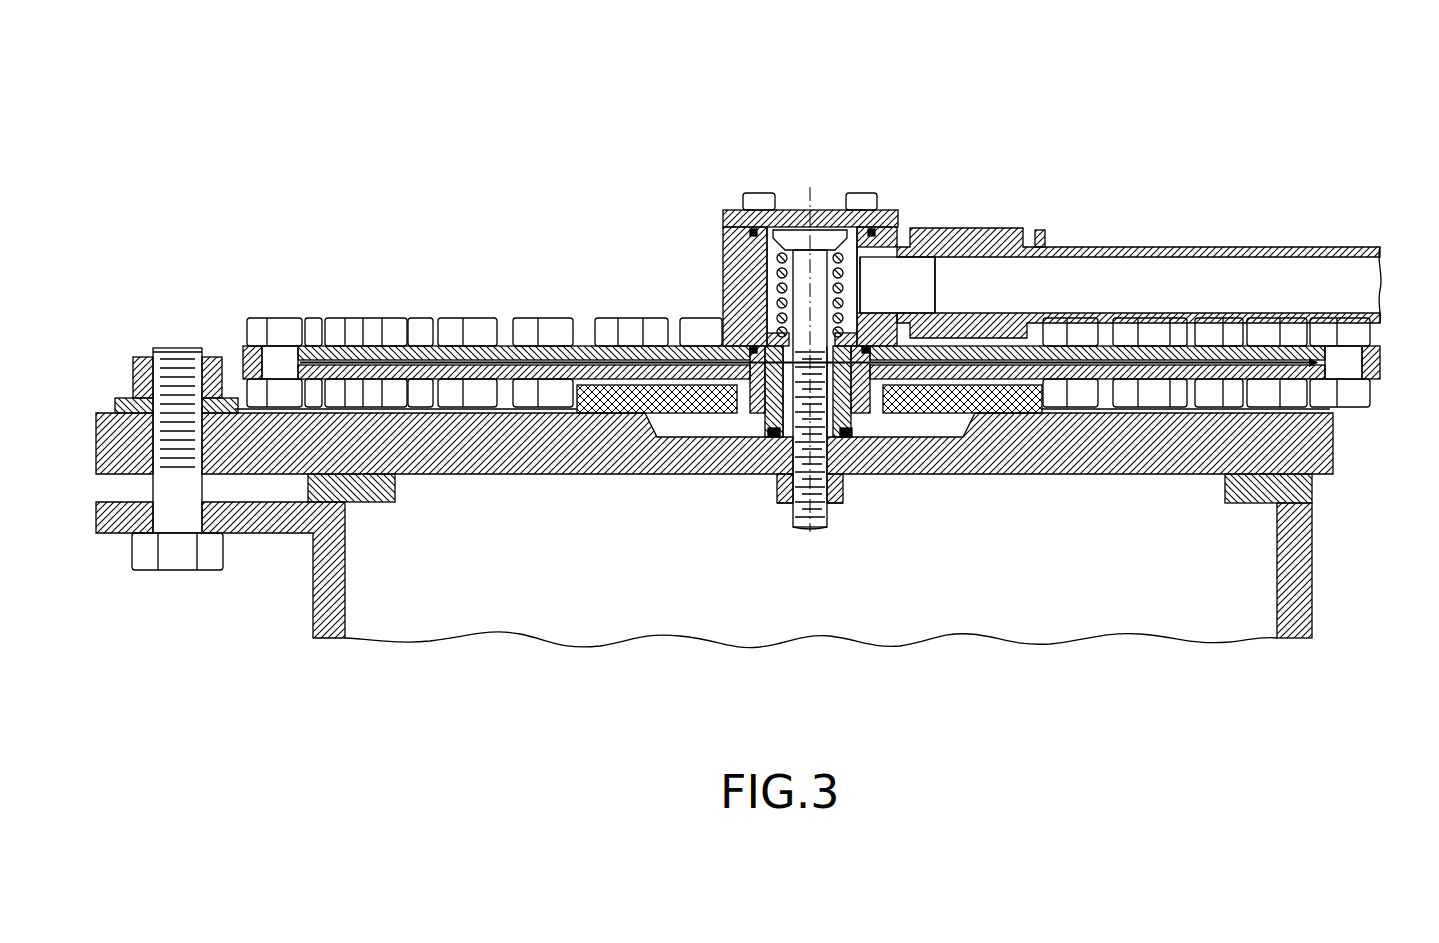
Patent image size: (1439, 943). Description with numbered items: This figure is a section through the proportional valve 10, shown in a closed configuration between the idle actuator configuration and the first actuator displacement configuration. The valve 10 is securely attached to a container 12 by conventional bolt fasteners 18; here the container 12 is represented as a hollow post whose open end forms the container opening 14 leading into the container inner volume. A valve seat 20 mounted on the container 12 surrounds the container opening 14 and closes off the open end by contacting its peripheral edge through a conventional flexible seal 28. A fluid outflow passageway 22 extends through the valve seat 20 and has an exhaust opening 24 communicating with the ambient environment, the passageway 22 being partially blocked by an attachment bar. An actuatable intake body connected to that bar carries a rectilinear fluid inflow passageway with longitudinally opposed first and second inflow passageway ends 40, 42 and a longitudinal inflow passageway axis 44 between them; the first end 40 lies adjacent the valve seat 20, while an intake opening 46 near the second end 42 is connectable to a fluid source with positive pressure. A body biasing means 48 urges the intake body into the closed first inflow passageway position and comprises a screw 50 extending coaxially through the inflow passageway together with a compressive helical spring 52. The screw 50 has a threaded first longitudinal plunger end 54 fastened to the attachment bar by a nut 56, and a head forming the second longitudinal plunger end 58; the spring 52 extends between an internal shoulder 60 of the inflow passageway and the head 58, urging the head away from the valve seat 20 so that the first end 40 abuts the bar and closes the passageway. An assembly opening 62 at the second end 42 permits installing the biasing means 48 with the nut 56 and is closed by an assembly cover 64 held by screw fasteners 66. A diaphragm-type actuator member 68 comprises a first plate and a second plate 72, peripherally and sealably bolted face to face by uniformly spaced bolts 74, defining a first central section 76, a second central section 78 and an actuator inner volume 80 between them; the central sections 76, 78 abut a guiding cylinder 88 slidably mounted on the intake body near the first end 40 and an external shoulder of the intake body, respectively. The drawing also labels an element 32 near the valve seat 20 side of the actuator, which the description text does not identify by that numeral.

The proportional valve 10 is at (541, 157).
The container 12 is at (312, 588).
The container opening 14 is at (347, 507).
The bolt fasteners 18 is at (137, 358).
The valve seat 20 is at (1336, 447).
The fluid outflow passageway 22 is at (682, 430).
The exhaust opening 24 is at (643, 385).
The flexible seal 28 is at (1247, 503).
The insulating block 32 is at (975, 430).
The first inflow passageway end 40 is at (832, 433).
The second inflow passageway end 42 is at (783, 231).
The longitudinal inflow passageway axis 44 is at (810, 545).
The intake opening 46 is at (855, 282).
The body biasing means 48 is at (924, 247).
The screw 50 is at (745, 445).
The compressive helical spring 52 is at (773, 257).
The first longitudinal plunger end 54 is at (832, 508).
The nut 56 is at (787, 507).
The second longitudinal plunger end 58 is at (830, 231).
The internal shoulder 60 is at (752, 305).
The assembly opening 62 is at (891, 206).
The assembly cover 64 is at (735, 210).
The screw fasteners 66 is at (760, 192).
The actuator member 68 is at (243, 351).
The second plate 72 is at (1381, 356).
The bolts 74 is at (333, 318).
The first central section 76 is at (497, 379).
The second central section 78 is at (502, 346).
The actuator inner volume 80 is at (950, 363).
The guiding cylinder 88 is at (873, 417).